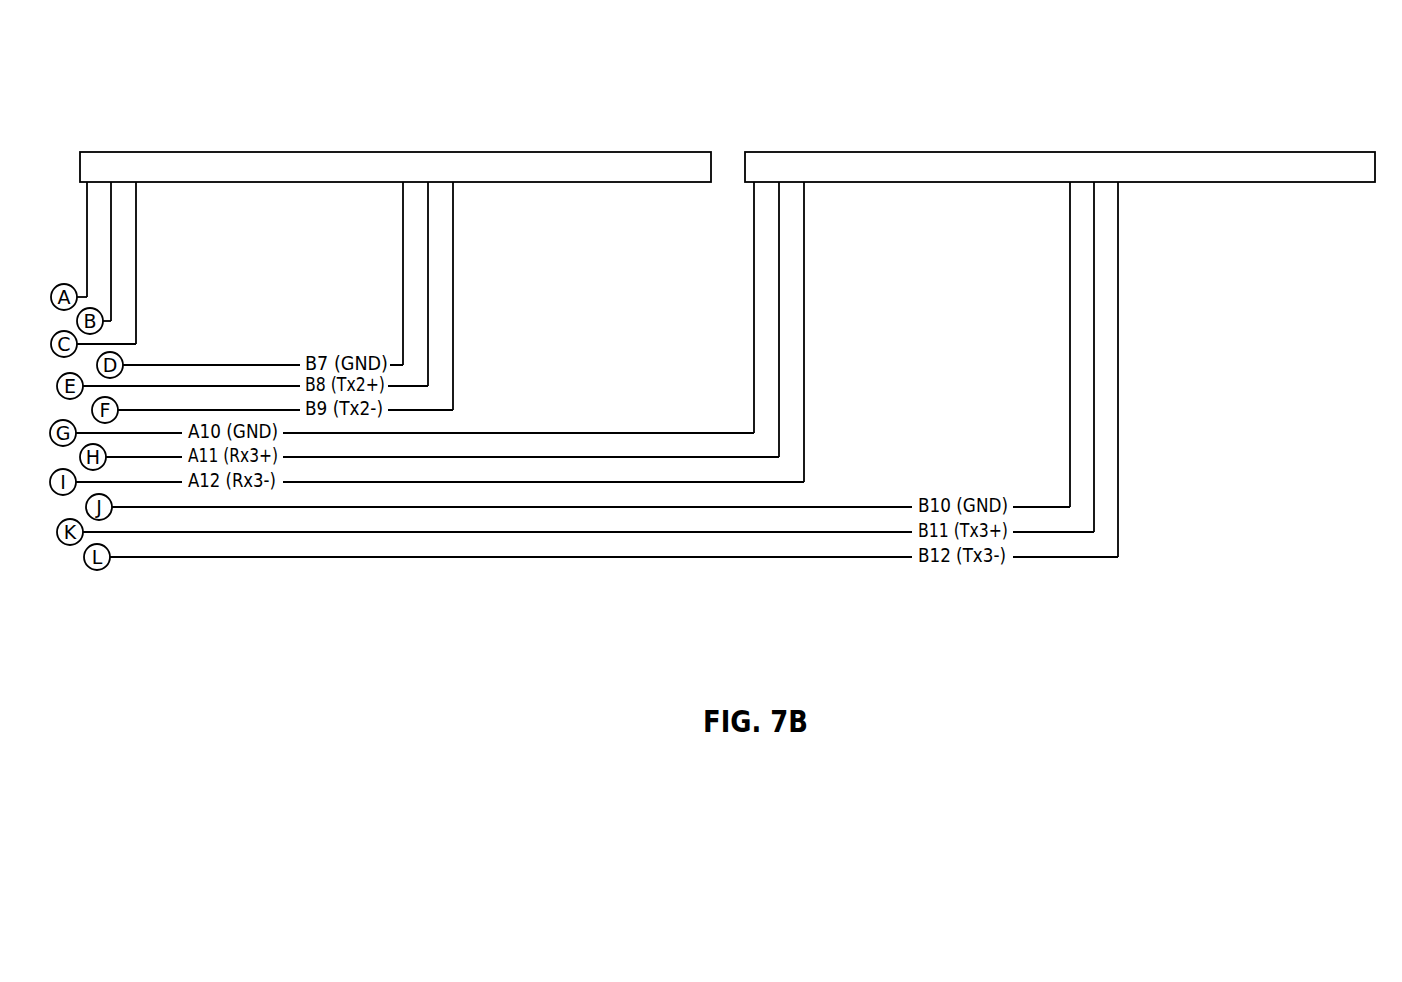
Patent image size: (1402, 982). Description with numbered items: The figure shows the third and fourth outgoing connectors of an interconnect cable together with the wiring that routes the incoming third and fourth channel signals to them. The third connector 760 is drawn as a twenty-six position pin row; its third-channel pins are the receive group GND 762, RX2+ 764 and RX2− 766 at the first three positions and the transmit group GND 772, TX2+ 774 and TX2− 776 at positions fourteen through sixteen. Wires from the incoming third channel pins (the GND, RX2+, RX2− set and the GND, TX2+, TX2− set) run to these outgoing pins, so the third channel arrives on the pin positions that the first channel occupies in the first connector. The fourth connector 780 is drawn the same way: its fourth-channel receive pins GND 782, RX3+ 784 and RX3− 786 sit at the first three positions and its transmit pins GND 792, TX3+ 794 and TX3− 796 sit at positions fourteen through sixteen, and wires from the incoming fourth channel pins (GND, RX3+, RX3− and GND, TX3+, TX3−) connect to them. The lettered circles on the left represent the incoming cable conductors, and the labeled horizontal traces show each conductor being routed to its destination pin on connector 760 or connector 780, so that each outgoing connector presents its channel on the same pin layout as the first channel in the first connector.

The third connector 760 is at (82, 152).
The GND pin 762 is at (88, 152).
The RX2+ pin 764 is at (111, 152).
The RX2− pin 766 is at (136, 152).
The GND pin 772 is at (403, 152).
The TX2+ pin 774 is at (428, 152).
The TX2− pin 776 is at (453, 152).
The fourth connector 780 is at (747, 152).
The GND pin 782 is at (755, 152).
The RX3+ pin 784 is at (778, 152).
The RX3− pin 786 is at (803, 152).
The GND pin 792 is at (1070, 152).
The TX3+ pin 794 is at (1094, 152).
The TX3− pin 796 is at (1118, 152).